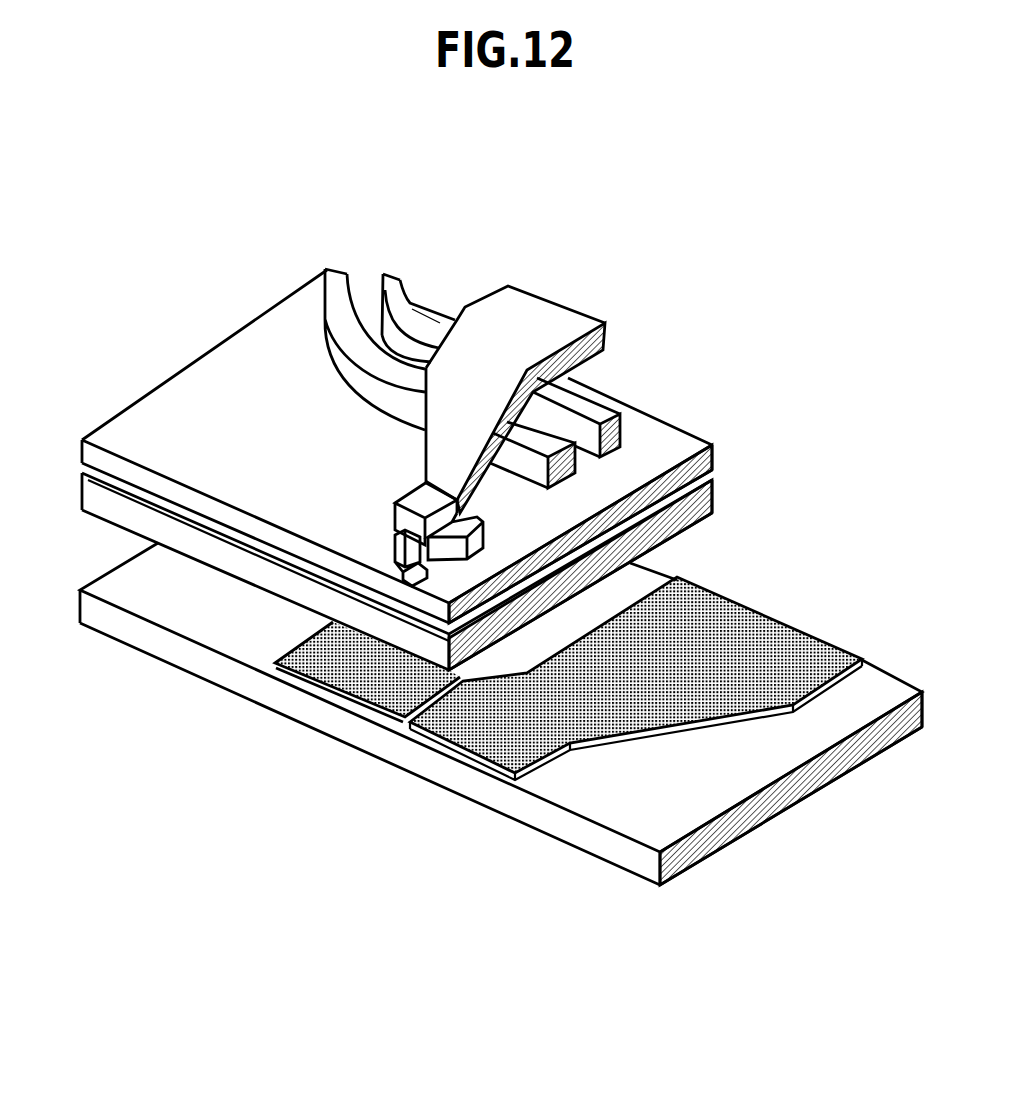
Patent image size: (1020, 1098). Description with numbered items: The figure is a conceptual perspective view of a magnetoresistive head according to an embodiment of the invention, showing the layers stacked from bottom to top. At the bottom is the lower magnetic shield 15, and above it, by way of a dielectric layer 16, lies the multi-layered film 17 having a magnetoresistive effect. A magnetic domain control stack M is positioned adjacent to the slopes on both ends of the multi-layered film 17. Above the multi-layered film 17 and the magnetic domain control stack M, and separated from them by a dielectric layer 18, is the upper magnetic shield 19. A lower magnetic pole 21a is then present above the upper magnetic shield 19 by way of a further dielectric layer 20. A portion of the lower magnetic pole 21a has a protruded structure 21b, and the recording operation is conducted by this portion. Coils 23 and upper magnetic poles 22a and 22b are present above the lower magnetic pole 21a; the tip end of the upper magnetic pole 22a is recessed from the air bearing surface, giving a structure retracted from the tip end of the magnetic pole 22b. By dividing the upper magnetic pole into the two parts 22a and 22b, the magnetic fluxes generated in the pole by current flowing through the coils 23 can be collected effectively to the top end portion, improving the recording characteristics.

The lower magnetic shield 15 is at (262, 688).
The dielectric layer 16 is at (480, 767).
The multi-layered film 17 is at (395, 727).
The dielectric layer 18 is at (103, 548).
The upper magnetic shield 19 is at (193, 540).
The dielectric layer 20 is at (227, 533).
The lower magnetic pole 21a is at (157, 437).
The protruded structure 21b is at (393, 572).
The upper magnetic pole 22a is at (567, 323).
The upper magnetic pole 22b is at (470, 542).
The coils 23 is at (593, 405).
The magnetic domain control stack M is at (744, 598).